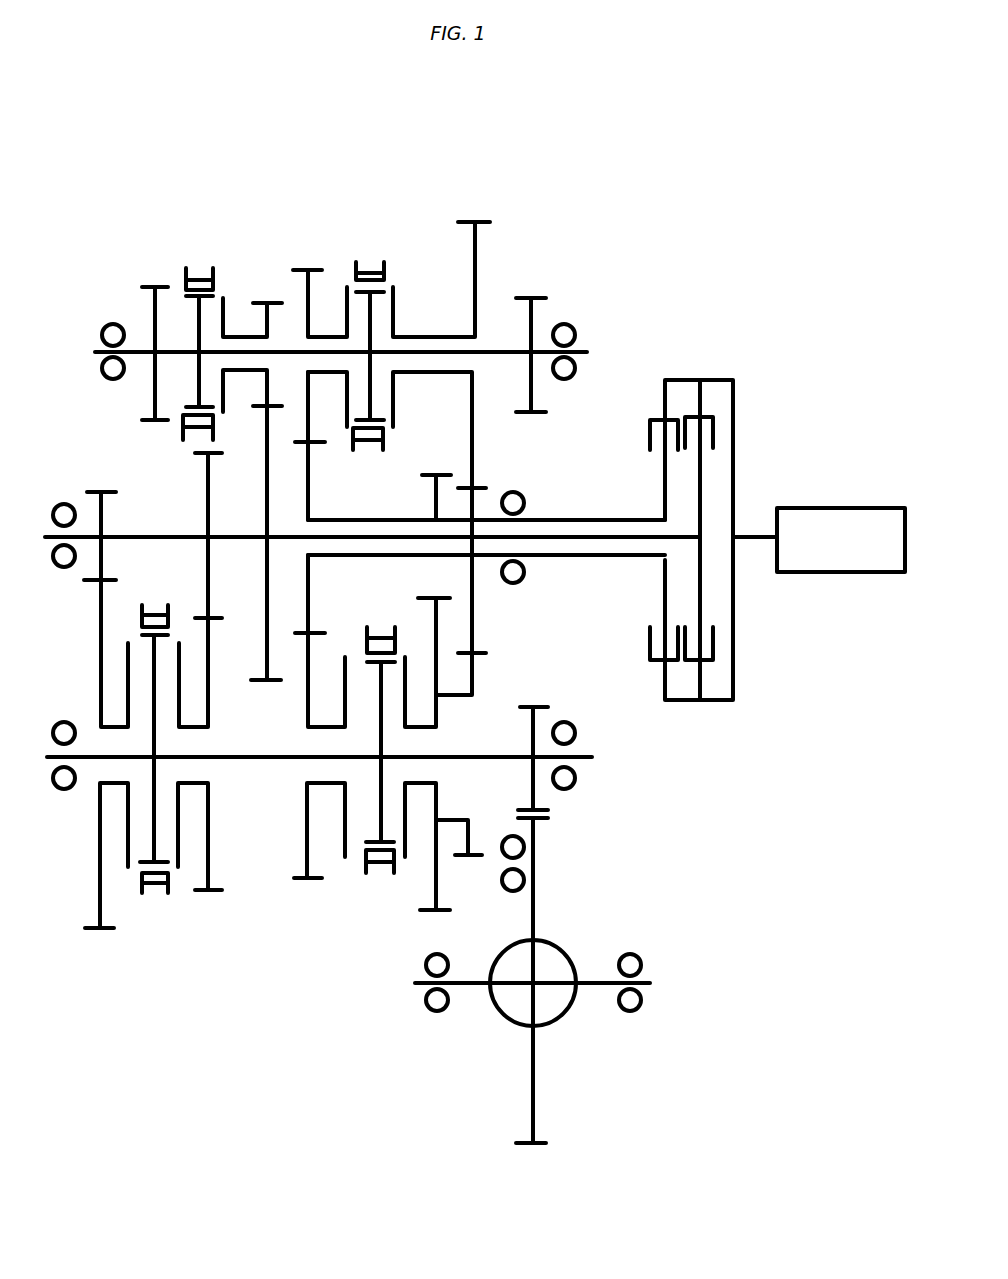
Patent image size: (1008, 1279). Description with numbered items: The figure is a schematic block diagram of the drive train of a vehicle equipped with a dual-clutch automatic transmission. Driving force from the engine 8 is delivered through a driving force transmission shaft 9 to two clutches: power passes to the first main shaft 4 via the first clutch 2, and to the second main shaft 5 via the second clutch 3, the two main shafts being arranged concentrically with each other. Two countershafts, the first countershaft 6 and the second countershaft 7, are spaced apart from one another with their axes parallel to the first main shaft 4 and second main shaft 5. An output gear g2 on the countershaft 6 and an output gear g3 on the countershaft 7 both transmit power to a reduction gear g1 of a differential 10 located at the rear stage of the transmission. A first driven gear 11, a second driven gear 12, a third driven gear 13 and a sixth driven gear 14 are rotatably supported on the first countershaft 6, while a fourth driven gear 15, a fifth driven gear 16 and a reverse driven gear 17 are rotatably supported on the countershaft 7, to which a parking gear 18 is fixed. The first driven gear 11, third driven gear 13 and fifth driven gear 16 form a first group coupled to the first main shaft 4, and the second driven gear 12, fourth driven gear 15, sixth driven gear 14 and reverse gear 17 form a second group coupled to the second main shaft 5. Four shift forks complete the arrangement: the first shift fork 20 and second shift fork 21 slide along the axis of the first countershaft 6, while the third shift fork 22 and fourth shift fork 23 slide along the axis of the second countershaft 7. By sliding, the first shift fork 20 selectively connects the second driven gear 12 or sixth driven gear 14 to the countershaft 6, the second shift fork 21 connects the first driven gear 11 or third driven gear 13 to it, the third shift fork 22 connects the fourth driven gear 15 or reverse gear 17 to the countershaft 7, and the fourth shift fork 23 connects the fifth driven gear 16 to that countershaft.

The first clutch 2 is at (713, 432).
The second clutch 3 is at (650, 420).
The first main shaft 4 is at (165, 530).
The second main shaft 5 is at (370, 518).
The first countershaft 6 is at (268, 755).
The second countershaft 7 is at (497, 346).
The engine 8 is at (883, 505).
The driving force transmission shaft 9 is at (752, 535).
The differential 10 is at (555, 945).
The first driven gear 11 is at (97, 880).
The second driven gear 12 is at (437, 862).
The third driven gear 13 is at (210, 865).
The sixth driven gear 14 is at (303, 808).
The fourth driven gear 15 is at (312, 320).
The fifth driven gear 16 is at (262, 320).
The reverse driven gear 17 is at (470, 290).
The parking gear 18 is at (150, 330).
The first shift fork 20 is at (380, 868).
The second shift fork 21 is at (153, 890).
The third shift fork 22 is at (372, 268).
The fourth shift fork 23 is at (198, 266).
The reduction gear g1 is at (537, 848).
The output gear g2 is at (538, 720).
The output gear g3 is at (535, 320).